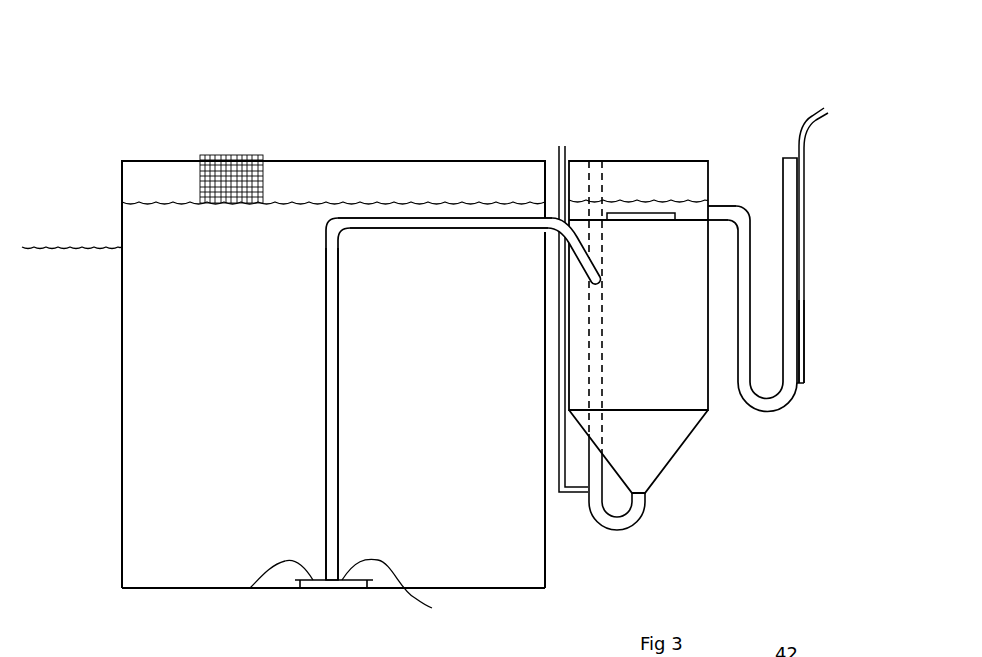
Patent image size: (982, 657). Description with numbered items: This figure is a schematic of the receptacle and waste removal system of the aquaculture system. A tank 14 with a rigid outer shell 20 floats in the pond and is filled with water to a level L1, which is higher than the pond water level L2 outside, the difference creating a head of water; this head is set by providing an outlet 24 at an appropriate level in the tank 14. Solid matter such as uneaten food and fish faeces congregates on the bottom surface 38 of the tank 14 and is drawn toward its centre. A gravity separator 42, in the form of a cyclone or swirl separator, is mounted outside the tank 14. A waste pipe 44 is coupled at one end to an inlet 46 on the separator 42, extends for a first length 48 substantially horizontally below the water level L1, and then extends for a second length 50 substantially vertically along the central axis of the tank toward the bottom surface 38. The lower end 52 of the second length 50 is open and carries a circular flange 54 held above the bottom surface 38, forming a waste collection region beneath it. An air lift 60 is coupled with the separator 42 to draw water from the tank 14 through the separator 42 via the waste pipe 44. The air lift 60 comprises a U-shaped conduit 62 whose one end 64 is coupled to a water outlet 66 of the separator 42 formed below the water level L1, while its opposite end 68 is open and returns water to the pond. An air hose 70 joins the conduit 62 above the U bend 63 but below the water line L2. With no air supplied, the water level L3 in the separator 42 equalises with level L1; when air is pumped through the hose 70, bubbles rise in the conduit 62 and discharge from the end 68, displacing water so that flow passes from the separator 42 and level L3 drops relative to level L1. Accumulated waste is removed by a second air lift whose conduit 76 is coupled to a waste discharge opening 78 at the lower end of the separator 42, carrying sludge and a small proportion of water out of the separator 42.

The tank 14 is at (146, 462).
The shell 20 is at (547, 568).
The outlet 24 is at (245, 153).
The bottom surface 38 is at (208, 580).
The gravity separator 42 is at (729, 82).
The waste pipe 44 is at (408, 206).
The inlet 46 is at (601, 282).
The first length 48 is at (373, 217).
The second length 50 is at (325, 248).
The lower end 52 is at (370, 595).
The circular flange 54 is at (265, 575).
The air lift 60 is at (828, 239).
The conduit 62 is at (811, 341).
The U bend 63 is at (773, 409).
The end 64 is at (724, 206).
The water outlet 66 is at (713, 203).
The opposite end 68 is at (790, 157).
The air hose 70 is at (806, 203).
The conduit 76 is at (584, 514).
The waste discharge opening 78 is at (647, 492).
The water level L1 is at (178, 200).
The water level L2 is at (77, 247).
The water level L3 is at (657, 200).